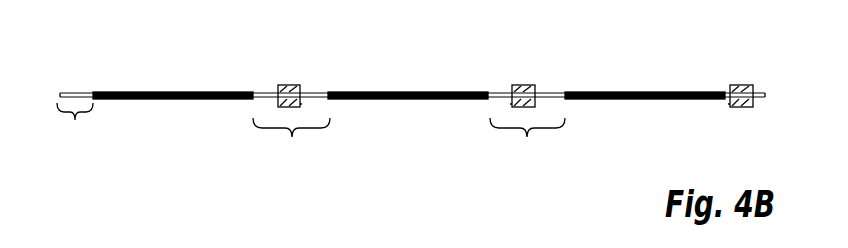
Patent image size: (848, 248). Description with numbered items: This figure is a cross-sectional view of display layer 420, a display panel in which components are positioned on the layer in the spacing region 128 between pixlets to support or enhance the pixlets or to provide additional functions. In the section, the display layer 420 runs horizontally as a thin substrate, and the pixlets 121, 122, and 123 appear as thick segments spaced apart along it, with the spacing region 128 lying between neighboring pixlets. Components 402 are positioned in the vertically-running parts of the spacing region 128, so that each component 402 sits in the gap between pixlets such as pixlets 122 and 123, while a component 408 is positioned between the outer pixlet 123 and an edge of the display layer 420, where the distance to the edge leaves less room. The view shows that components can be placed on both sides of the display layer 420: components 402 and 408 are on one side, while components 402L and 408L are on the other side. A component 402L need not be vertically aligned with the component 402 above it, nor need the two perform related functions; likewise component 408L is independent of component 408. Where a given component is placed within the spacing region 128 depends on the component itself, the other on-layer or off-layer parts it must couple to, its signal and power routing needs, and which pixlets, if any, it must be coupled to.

The display layer 420 is at (73, 52).
The first coil segment 121 is at (182, 92).
The pixlet 122 is at (415, 92).
The pixlet 123 is at (645, 92).
The component 402 is at (292, 85).
The component 402L is at (300, 104).
The spacing region 128 is at (409, 142).
The component 408 is at (742, 85).
The component 408L is at (730, 102).